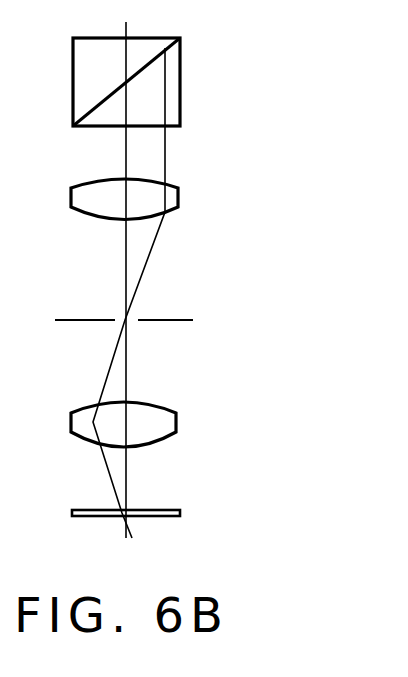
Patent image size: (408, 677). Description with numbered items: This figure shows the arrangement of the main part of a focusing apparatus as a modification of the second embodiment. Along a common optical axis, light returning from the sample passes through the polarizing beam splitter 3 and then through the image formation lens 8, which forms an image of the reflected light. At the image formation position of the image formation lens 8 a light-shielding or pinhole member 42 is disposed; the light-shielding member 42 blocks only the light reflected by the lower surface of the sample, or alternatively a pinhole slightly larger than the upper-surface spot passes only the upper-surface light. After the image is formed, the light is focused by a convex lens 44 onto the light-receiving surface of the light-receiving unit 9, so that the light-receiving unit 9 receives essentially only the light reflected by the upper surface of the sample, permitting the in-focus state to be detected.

The polarizing beam splitter 3 is at (73, 77).
The image formation lens 8 is at (178, 190).
The light-shielding member 42 is at (166, 322).
The convex lens 44 is at (176, 425).
The light-receiving unit 9 is at (180, 513).